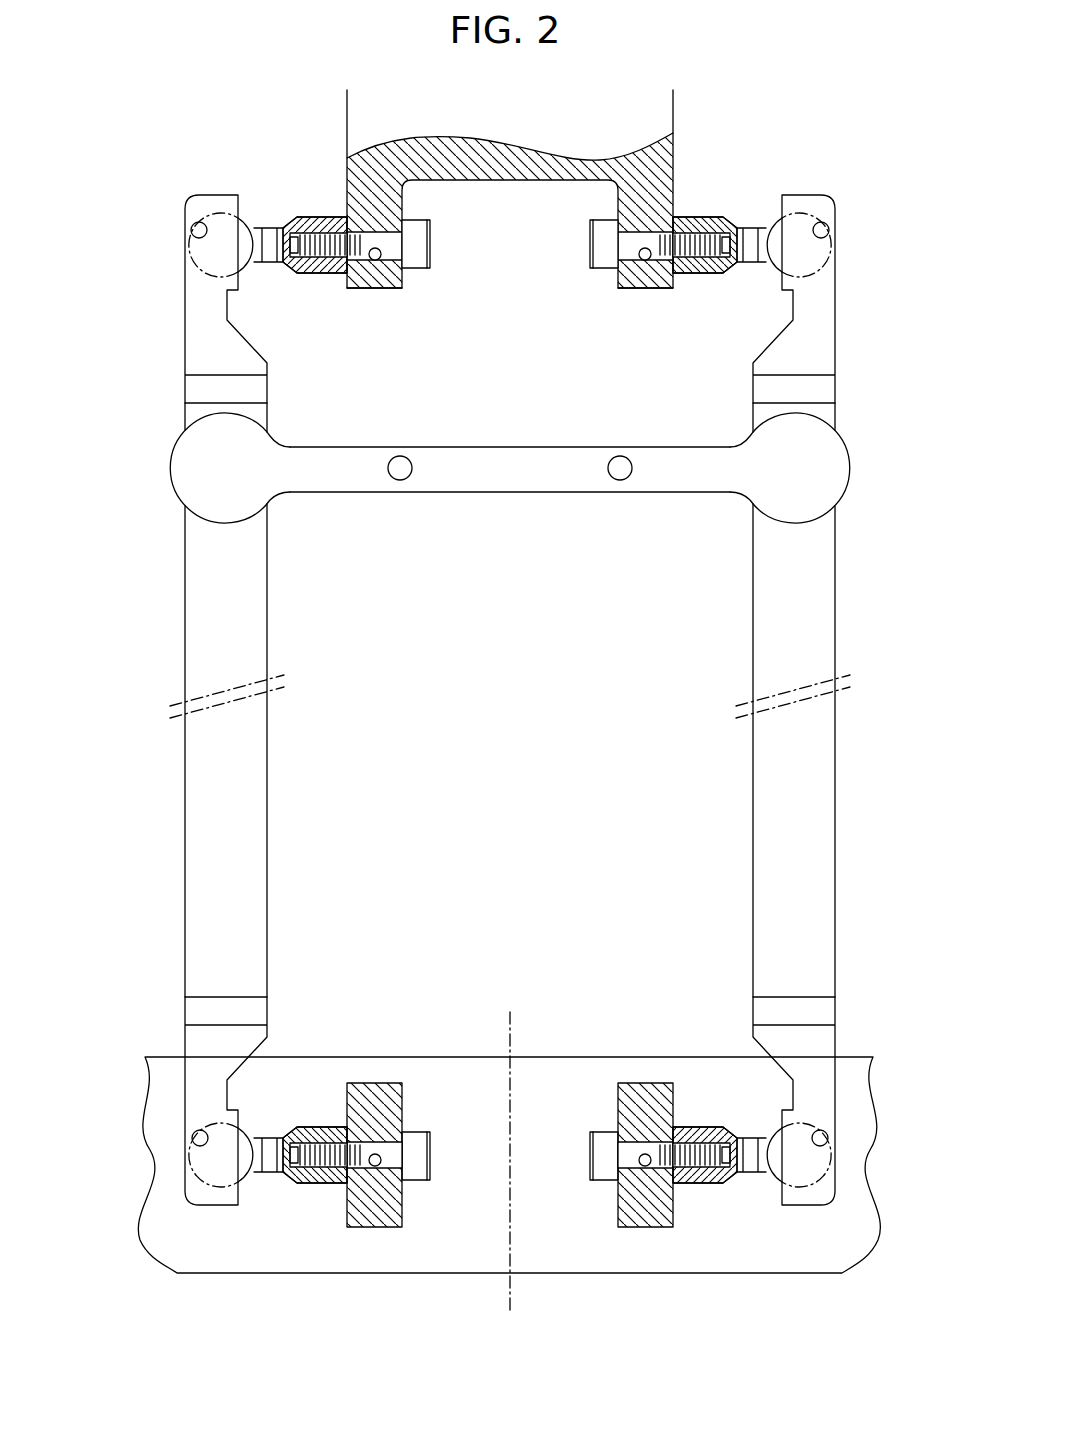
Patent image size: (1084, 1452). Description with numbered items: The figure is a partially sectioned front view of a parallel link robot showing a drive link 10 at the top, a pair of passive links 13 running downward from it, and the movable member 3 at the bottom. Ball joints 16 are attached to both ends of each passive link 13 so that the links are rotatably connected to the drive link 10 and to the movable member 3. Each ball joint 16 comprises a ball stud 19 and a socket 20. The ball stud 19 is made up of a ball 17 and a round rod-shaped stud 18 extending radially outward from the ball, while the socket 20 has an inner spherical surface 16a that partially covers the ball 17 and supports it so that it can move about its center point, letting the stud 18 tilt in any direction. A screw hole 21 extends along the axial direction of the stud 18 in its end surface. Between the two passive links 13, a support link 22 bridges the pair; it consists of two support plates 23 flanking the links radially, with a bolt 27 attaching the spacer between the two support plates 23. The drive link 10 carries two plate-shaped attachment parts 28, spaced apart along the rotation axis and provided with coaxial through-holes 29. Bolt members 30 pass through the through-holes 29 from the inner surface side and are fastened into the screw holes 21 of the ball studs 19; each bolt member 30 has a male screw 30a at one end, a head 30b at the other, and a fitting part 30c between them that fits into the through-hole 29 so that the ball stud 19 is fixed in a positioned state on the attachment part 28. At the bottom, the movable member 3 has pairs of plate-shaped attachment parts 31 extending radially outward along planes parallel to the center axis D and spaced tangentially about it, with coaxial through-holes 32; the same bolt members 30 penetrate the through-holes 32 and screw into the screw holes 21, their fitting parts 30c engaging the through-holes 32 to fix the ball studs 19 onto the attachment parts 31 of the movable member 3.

The movable member 3 is at (509, 1166).
The drive link 10 is at (333, 95).
The passive link 13 is at (890, 588).
The ball joint 16 is at (508, 718).
The inner spherical surface 16a is at (206, 228).
The ball 17 is at (247, 270).
The stud 18 is at (298, 216).
The ball stud 19 is at (262, 215).
The socket 20 is at (185, 262).
The screw hole 21 is at (325, 258).
The support link 22 is at (509, 504).
The support plate 23 is at (513, 494).
The bolt 27 is at (399, 481).
The attachment part 28 is at (414, 289).
The through-hole 29 is at (375, 260).
The bolt member 30 is at (510, 675).
The male screw 30a is at (333, 232).
The head 30b is at (431, 243).
The fitting part 30c is at (378, 240).
The attachment part 31 is at (510, 1131).
The through-hole 32 is at (376, 1166).
The center axis D is at (505, 1030).